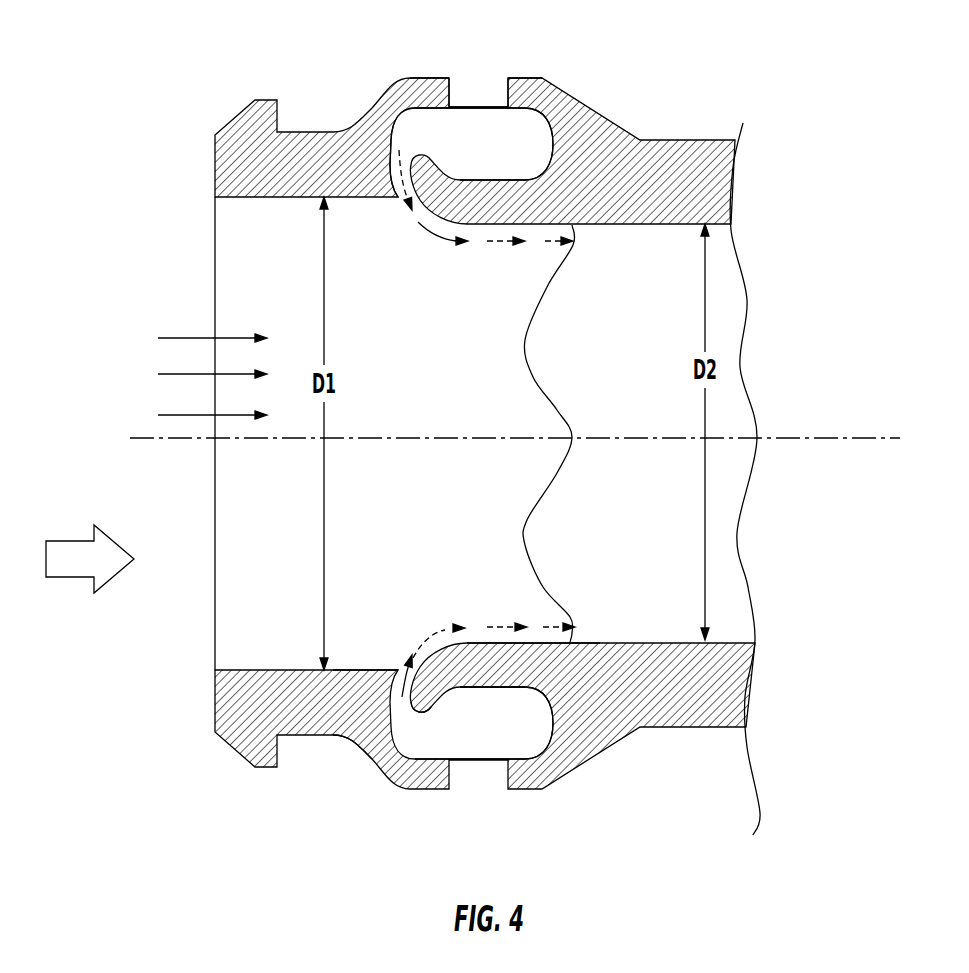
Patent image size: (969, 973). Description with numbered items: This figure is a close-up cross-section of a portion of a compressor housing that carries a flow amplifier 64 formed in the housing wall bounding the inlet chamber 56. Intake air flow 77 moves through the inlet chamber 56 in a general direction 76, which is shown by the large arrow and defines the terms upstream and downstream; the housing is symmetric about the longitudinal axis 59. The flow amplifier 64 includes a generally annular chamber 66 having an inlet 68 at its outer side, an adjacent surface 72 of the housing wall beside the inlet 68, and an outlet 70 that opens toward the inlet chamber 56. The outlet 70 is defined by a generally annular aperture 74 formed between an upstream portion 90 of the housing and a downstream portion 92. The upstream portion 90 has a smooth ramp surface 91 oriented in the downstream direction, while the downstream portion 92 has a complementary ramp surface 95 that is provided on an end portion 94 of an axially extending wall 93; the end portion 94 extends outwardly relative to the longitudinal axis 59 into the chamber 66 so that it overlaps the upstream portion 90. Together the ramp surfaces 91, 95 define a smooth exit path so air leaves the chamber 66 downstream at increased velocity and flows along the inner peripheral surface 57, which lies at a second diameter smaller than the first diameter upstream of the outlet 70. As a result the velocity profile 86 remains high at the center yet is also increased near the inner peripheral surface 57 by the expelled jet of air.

The inlet chamber 56 is at (227, 637).
The inner peripheral surface 57 is at (625, 225).
The longitudinal axis 59 is at (837, 437).
The flow amplifier 64 is at (430, 78).
The chamber 66 is at (498, 145).
The inlet 68 is at (482, 78).
The outlet 70 is at (394, 210).
The downstream face 72 is at (495, 92).
The aperture 74 is at (400, 167).
The direction 76 is at (70, 577).
The air flow 77 is at (185, 338).
The velocity profile 86 is at (542, 387).
The upstream portion 90 is at (388, 658).
The ramp surface 91 is at (392, 684).
The downstream portion 92 is at (427, 620).
The axially extending wall 93 is at (480, 657).
The end portion 94 is at (459, 711).
The ramp surface 95 is at (425, 697).